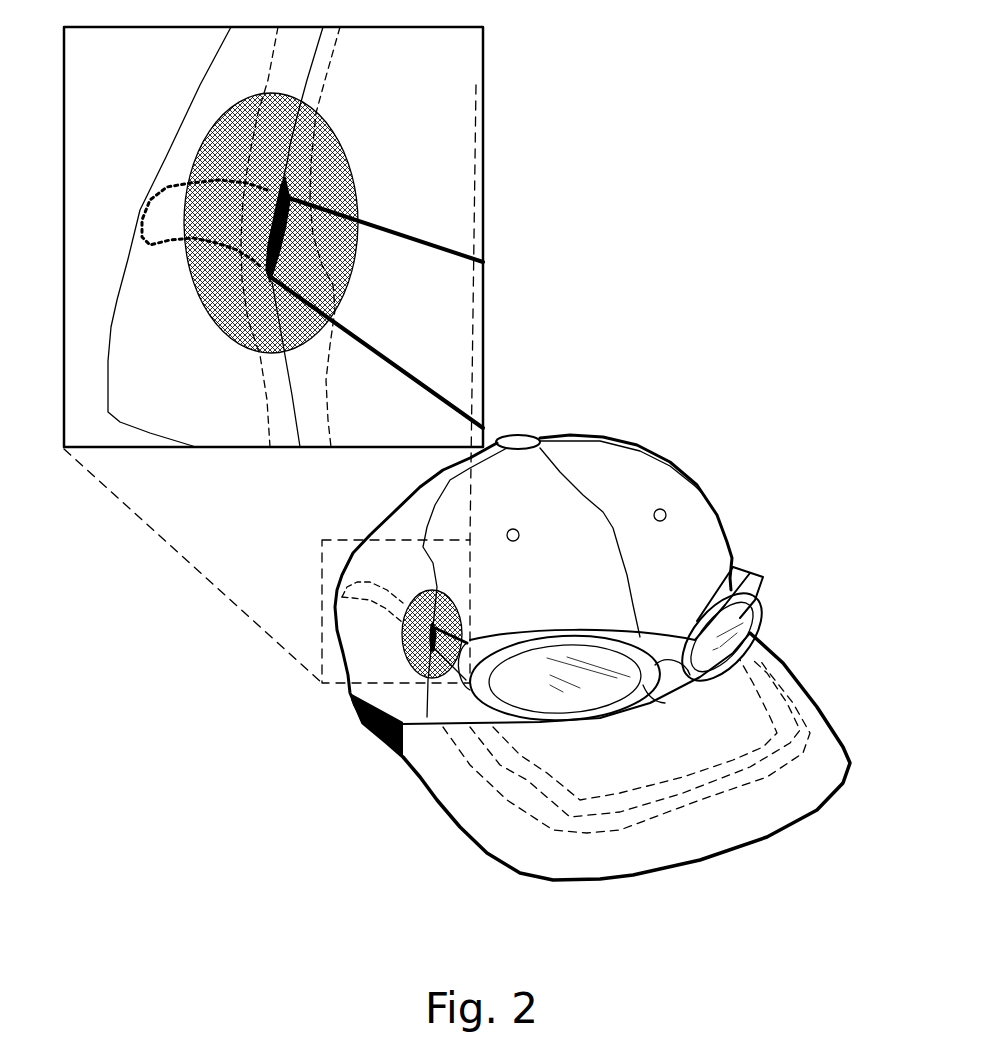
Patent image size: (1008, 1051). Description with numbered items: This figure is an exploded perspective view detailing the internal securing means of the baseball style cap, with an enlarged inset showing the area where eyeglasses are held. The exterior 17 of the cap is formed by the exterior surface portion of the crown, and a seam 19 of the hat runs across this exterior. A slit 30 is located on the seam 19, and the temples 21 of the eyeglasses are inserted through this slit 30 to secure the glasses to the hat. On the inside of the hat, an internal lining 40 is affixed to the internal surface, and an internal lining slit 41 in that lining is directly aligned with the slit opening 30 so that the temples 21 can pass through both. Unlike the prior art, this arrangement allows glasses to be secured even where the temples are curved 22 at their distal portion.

The exterior 17 is at (457, 453).
The seam 19 is at (322, 51).
The temples 21 is at (433, 237).
The curved distal portion of temples 22 is at (375, 351).
The slit 30 is at (524, 443).
The internal lining 40 is at (297, 403).
The internal lining slit 41 is at (250, 420).